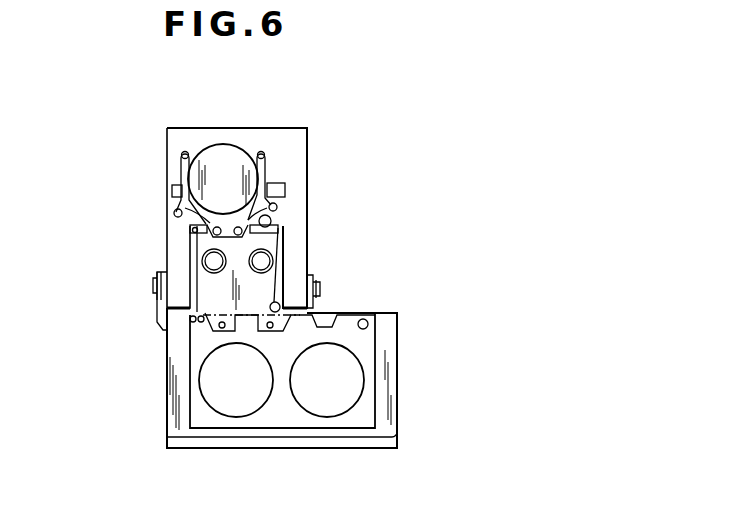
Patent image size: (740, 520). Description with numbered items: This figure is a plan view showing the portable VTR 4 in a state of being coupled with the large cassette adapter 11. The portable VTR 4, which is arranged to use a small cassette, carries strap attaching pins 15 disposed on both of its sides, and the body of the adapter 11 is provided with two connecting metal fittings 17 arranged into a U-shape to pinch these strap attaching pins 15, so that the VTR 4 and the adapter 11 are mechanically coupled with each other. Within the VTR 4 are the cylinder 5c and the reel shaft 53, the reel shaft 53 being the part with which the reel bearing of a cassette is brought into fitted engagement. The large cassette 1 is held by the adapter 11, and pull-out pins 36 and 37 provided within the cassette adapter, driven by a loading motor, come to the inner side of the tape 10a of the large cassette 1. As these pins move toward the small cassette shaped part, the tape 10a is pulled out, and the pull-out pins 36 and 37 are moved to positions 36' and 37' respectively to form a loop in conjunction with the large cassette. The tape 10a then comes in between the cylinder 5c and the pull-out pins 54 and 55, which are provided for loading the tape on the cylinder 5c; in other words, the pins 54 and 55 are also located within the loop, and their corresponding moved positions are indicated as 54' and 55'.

The large cassette 1 is at (375, 358).
The portable VTR 4 is at (313, 133).
The cylinder 5c is at (227, 143).
The tape 10a is at (266, 167).
The large cassette adapter 11 is at (400, 410).
The strap attaching pins 15 is at (153, 288).
The connecting metal fittings 17 is at (160, 313).
The pull-out pin 36 is at (247, 342).
The position of pull-out pin 36 36' is at (163, 230).
The pull-out pin 37 is at (277, 359).
The position of pull-out pin 37 37' is at (306, 219).
The reel shaft 53 is at (224, 250).
The pull-out pin 54 is at (151, 201).
The position of pull-out pin 54 54' is at (159, 178).
The pull-out pin 55 is at (312, 194).
The position of pull-out pin 55 55' is at (278, 157).